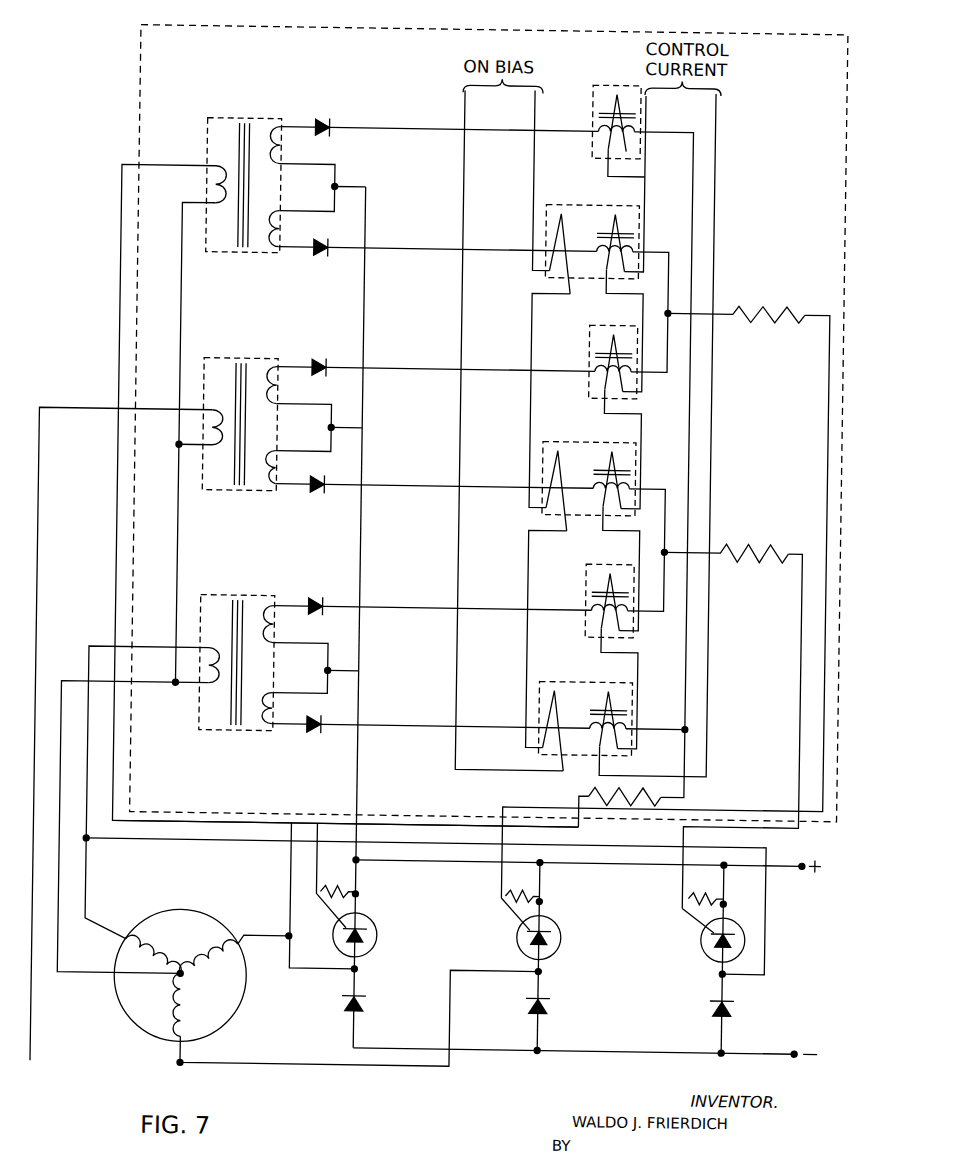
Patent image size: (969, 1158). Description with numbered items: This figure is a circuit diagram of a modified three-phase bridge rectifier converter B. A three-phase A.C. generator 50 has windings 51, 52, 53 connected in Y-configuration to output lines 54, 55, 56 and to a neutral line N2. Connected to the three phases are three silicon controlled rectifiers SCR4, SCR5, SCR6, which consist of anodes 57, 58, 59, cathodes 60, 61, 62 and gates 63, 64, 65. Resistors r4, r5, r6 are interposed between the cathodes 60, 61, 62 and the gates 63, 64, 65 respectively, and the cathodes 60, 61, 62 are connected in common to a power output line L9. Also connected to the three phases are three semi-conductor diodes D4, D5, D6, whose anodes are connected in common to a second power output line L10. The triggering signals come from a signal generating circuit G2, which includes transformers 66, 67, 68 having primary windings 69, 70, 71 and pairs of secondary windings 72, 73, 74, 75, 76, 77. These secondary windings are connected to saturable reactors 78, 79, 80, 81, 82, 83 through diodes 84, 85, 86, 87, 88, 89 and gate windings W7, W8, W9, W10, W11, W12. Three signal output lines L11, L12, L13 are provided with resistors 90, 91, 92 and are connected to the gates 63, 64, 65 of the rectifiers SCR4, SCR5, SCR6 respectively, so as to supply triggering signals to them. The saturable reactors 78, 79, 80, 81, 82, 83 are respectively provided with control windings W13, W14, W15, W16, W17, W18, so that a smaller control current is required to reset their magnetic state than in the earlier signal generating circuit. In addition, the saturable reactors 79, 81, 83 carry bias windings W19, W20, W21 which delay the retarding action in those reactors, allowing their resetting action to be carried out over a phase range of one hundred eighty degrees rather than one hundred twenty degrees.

The three-phase A.C. generator 50 is at (202, 975).
The winding 51 is at (210, 960).
The winding 52 is at (186, 1008).
The winding 53 is at (160, 950).
The output line 54 is at (252, 936).
The output line 55 is at (170, 1052).
The output line 56 is at (118, 935).
The anode 57 is at (352, 944).
The anode 58 is at (536, 944).
The anode 59 is at (720, 944).
The cathode 60 is at (371, 925).
The cathode 61 is at (555, 925).
The cathode 62 is at (742, 928).
The gate 63 is at (332, 904).
The gate 64 is at (516, 906).
The gate 65 is at (700, 908).
The transformer 66 is at (248, 122).
The transformer 67 is at (250, 360).
The transformer 68 is at (246, 598).
The primary winding 69 is at (210, 193).
The primary winding 70 is at (210, 436).
The primary winding 71 is at (210, 670).
The secondary winding 72 is at (268, 156).
The secondary winding 73 is at (268, 241).
The secondary winding 74 is at (266, 395).
The secondary winding 75 is at (268, 476).
The secondary winding 76 is at (268, 636).
The secondary winding 77 is at (268, 716).
The saturable reactor 78 is at (614, 394).
The saturable reactor 79 is at (576, 242).
The saturable reactor 80 is at (602, 362).
The saturable reactor 81 is at (570, 513).
The saturable reactor 82 is at (600, 596).
The saturable reactor 83 is at (576, 710).
The diode 84 is at (320, 120).
The diode 85 is at (320, 258).
The diode 86 is at (318, 359).
The diode 87 is at (318, 496).
The diode 88 is at (320, 599).
The diode 89 is at (318, 735).
The resistor 90 is at (665, 794).
The resistor 91 is at (768, 304).
The resistor 92 is at (735, 540).
The gate winding W7 is at (632, 131).
The gate winding W8 is at (632, 250).
The gate winding W9 is at (628, 390).
The gate winding W10 is at (630, 488).
The gate winding W11 is at (624, 612).
The gate winding W12 is at (630, 722).
The control winding W13 is at (608, 100).
The control winding W14 is at (612, 212).
The control winding W15 is at (605, 345).
The control winding W16 is at (605, 460).
The control winding W17 is at (605, 585).
The control winding W18 is at (605, 700).
The bias winding W19 is at (554, 226).
The bias winding W20 is at (554, 462).
The bias winding W21 is at (554, 695).
The power output line L9 is at (787, 861).
The power output line L10 is at (788, 1049).
The signal output line L11 is at (392, 820).
The signal output line L12 is at (828, 370).
The signal output line L13 is at (804, 609).
The silicon controlled rectifier SCR4 is at (358, 898).
The silicon controlled rectifier SCR5 is at (539, 956).
The silicon controlled rectifier SCR6 is at (729, 959).
The semi-conductor diode D4 is at (372, 1003).
The semi-conductor diode D5 is at (558, 1003).
The semi-conductor diode D6 is at (742, 1005).
The resistor r4 is at (329, 889).
The resistor r5 is at (510, 895).
The resistor r6 is at (698, 897).
The signal generating circuit G2 is at (131, 93).
The neutral line N2 is at (90, 986).
The three-phase bridge rectifier converter B is at (723, 244).